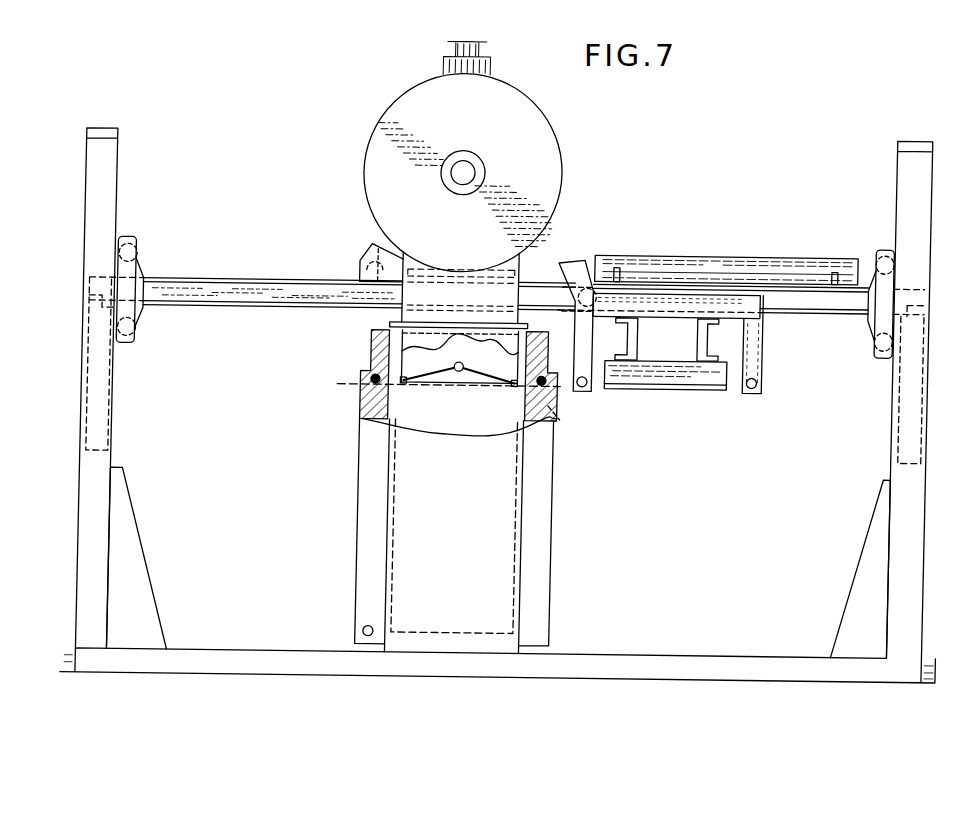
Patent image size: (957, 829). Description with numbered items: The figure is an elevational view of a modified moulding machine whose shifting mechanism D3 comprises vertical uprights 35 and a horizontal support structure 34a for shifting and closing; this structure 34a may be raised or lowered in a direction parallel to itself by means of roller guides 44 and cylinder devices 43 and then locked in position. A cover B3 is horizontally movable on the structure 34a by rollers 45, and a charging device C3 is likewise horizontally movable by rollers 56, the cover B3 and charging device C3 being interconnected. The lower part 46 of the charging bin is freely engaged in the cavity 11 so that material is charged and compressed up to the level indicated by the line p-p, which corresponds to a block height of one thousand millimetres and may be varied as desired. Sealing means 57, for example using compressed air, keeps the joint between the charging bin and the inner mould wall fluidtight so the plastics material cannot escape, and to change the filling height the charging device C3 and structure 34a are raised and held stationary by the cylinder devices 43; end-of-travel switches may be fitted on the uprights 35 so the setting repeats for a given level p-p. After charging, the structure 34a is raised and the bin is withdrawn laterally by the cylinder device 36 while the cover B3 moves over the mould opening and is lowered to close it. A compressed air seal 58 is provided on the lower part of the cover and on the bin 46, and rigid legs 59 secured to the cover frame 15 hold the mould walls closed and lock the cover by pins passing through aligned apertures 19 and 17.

The cavity 11 is at (395, 507).
The frame or reinforcement of the cover 15 is at (720, 300).
The aperture in the legs 17 is at (593, 393).
The aperture in the moulding box 19 is at (368, 372).
The horizontal support structure 34a is at (270, 286).
The vertical uprights 35 is at (95, 490).
The cylinder device 36 is at (638, 262).
The cylinder devices 43 is at (112, 398).
The roller guides 44 is at (140, 262).
The rollers 45 is at (582, 262).
The lower part of the charging bin 46 is at (482, 337).
The rollers 56 is at (367, 252).
The sealing means 57 is at (416, 387).
The compressed air seal 58 is at (724, 384).
The legs 59 is at (584, 386).
The cover B3 is at (677, 298).
The charging device C3 is at (382, 124).
The shifting mechanism D3 is at (768, 255).
The filling level line p is at (446, 400).